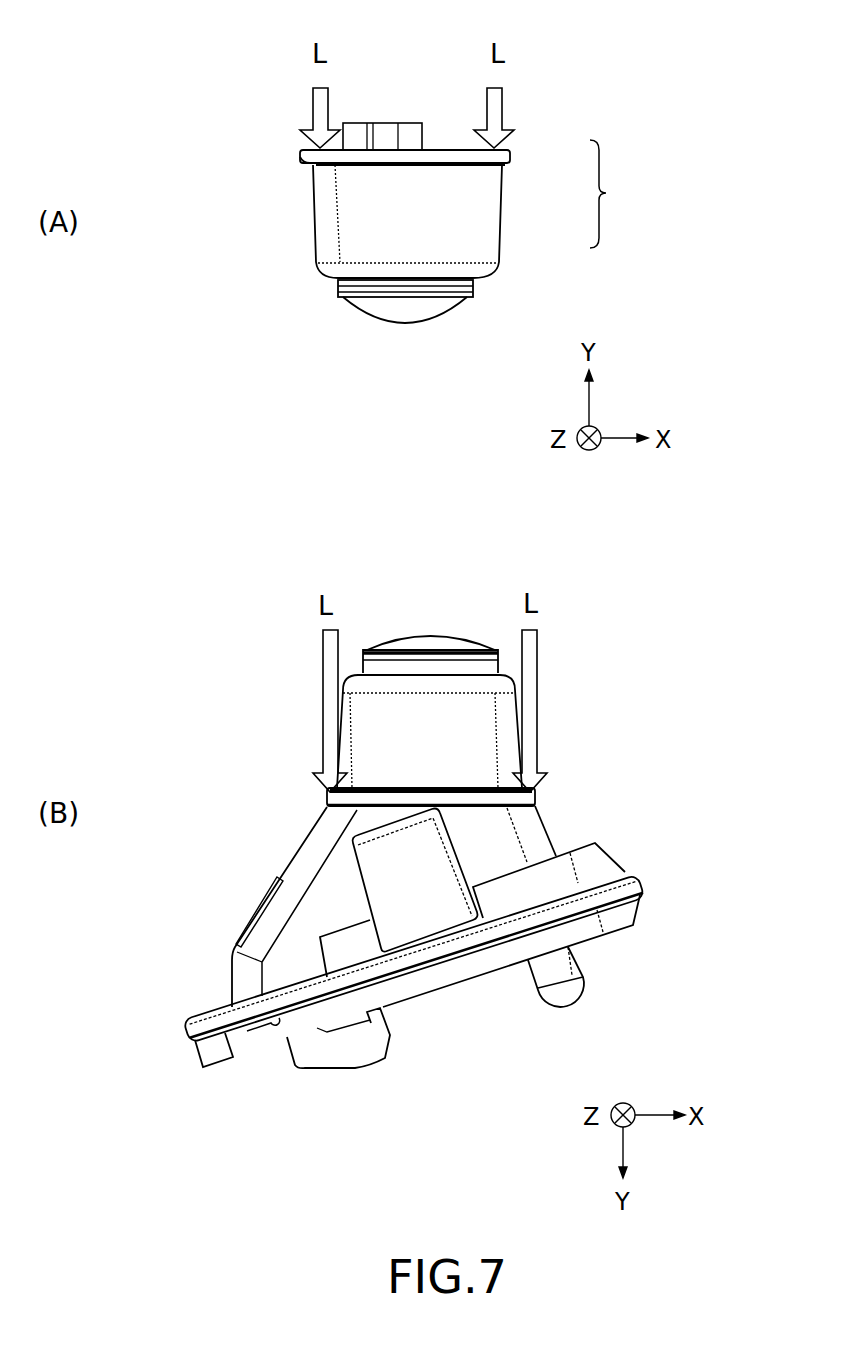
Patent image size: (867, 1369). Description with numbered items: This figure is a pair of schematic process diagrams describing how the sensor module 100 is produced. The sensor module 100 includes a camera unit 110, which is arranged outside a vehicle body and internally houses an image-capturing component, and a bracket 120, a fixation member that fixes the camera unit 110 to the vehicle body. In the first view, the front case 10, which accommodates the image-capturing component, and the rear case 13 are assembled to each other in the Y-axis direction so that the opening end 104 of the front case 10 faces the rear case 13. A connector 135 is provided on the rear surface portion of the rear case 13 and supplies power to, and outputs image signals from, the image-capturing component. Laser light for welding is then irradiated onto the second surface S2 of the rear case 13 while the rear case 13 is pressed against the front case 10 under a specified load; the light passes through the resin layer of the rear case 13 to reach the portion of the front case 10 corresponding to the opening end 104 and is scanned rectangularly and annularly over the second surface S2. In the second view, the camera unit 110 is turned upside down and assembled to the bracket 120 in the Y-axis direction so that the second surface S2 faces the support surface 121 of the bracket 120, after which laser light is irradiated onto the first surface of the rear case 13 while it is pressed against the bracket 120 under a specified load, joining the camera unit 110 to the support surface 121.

The sensor module 100 is at (230, 618).
The camera unit 110 is at (425, 665).
The front case 10 is at (440, 222).
The rear case 13 is at (513, 150).
The connector 135 is at (381, 123).
The opening end 104 is at (310, 158).
The second surface S2 is at (447, 148).
The bracket 120 is at (640, 882).
The support surface 121 is at (535, 793).